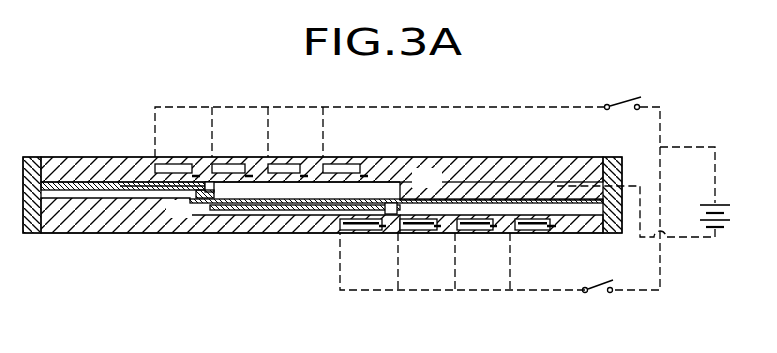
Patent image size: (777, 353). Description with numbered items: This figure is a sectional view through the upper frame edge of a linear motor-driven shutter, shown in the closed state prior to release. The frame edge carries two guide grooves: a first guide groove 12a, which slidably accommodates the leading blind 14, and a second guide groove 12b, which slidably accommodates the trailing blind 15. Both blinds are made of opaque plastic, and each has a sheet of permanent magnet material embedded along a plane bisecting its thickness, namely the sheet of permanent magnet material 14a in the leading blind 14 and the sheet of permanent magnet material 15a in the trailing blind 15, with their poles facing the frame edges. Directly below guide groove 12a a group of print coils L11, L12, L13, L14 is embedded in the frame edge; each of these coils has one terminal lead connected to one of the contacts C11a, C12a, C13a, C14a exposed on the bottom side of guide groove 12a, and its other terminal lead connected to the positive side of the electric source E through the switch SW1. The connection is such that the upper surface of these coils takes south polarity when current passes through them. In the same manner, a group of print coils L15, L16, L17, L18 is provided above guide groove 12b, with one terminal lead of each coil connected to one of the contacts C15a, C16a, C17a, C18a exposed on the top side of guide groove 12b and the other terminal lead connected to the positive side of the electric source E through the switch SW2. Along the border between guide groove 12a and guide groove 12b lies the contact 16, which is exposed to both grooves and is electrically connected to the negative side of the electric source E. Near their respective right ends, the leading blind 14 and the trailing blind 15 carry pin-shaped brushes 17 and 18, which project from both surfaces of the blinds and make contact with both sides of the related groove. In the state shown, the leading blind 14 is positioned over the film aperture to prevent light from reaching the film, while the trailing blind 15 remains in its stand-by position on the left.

The guide groove 12a is at (547, 207).
The guide groove 12b is at (243, 190).
The leading blind 14 is at (275, 205).
The sheet of permanent magnet material 14a is at (318, 208).
The trailing blind 15 is at (80, 187).
The sheet of permanent magnet material 15a is at (136, 188).
The contact 16 is at (488, 190).
The pin-shaped brush 17 is at (407, 199).
The pin-shaped brush 18 is at (198, 193).
The print coil L11 is at (362, 228).
The print coil L12 is at (420, 228).
The print coil L13 is at (476, 228).
The print coil L14 is at (531, 228).
The print coil L15 is at (174, 164).
The print coil L16 is at (229, 166).
The print coil L17 is at (290, 166).
The print coil L18 is at (343, 166).
The contact C11a is at (383, 233).
The contact C12a is at (441, 233).
The contact C13a is at (498, 233).
The contact C14a is at (573, 225).
The contact C15a is at (197, 180).
The contact C16a is at (264, 180).
The contact C17a is at (323, 180).
The contact C18a is at (395, 180).
The switch SW1 is at (596, 294).
The switch SW2 is at (624, 100).
The electric source E is at (697, 215).